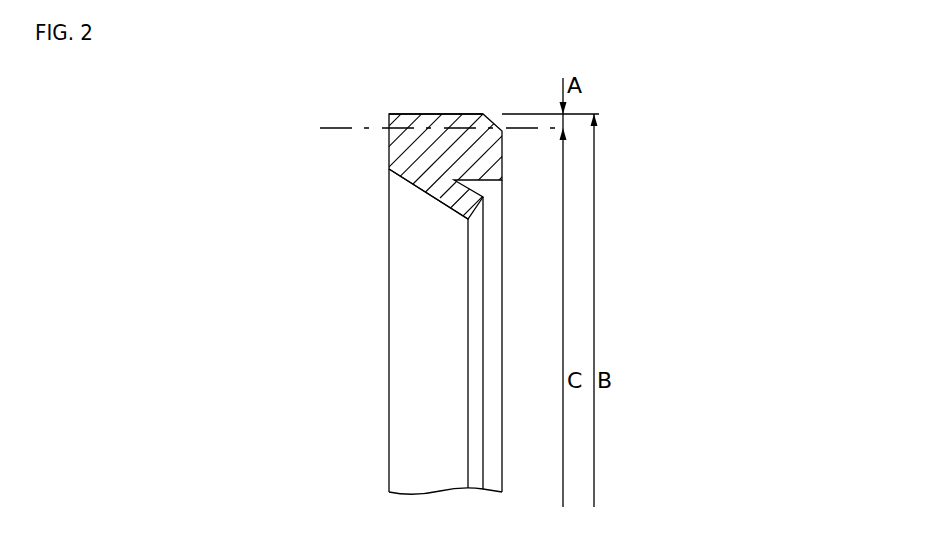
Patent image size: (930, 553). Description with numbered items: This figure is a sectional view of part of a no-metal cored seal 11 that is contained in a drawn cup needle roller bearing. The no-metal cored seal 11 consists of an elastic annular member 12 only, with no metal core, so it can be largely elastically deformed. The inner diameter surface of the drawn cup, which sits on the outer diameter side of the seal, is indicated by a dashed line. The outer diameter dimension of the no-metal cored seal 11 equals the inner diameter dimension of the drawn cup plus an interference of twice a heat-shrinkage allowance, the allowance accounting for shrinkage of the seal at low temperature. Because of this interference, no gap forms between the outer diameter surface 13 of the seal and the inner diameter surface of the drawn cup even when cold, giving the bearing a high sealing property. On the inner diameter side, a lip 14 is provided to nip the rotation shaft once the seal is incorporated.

The no-metal cored seal 11 is at (484, 56).
The elastic annular member 12 is at (407, 157).
The outer diameter surface 13 is at (427, 113).
The lip 14 is at (465, 216).